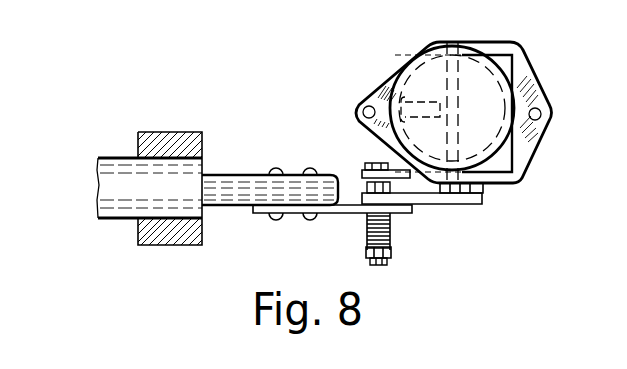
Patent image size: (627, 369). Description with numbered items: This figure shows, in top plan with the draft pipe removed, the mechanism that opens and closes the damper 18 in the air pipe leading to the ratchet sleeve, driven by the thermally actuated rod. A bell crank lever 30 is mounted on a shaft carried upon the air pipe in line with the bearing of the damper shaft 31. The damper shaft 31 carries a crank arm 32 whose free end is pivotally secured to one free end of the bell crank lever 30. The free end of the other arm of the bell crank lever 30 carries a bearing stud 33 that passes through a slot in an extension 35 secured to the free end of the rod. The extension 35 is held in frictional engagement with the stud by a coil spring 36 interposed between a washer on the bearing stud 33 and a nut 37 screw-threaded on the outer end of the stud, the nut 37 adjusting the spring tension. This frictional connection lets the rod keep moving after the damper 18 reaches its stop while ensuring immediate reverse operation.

The damper 18 is at (490, 150).
The bell crank lever 30 is at (440, 200).
The damper shaft 31 is at (453, 97).
The crank arm 32 is at (470, 188).
The bearing stud 33 is at (387, 265).
The extension 35 is at (347, 210).
The coil spring 36 is at (392, 228).
The nut 37 is at (365, 253).